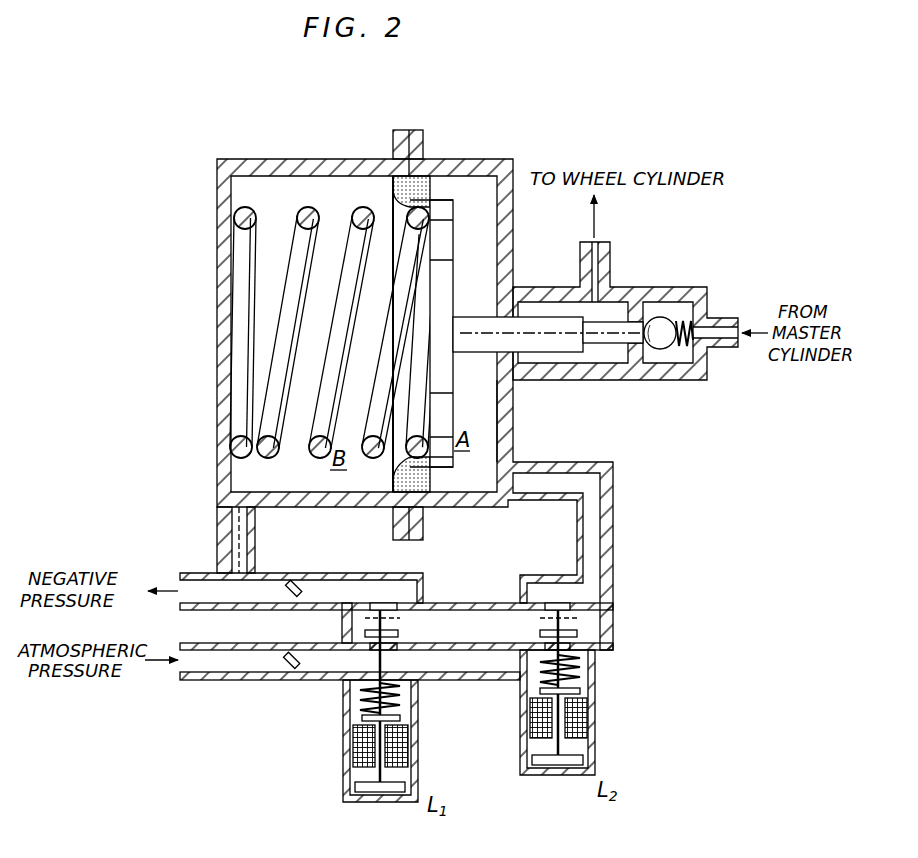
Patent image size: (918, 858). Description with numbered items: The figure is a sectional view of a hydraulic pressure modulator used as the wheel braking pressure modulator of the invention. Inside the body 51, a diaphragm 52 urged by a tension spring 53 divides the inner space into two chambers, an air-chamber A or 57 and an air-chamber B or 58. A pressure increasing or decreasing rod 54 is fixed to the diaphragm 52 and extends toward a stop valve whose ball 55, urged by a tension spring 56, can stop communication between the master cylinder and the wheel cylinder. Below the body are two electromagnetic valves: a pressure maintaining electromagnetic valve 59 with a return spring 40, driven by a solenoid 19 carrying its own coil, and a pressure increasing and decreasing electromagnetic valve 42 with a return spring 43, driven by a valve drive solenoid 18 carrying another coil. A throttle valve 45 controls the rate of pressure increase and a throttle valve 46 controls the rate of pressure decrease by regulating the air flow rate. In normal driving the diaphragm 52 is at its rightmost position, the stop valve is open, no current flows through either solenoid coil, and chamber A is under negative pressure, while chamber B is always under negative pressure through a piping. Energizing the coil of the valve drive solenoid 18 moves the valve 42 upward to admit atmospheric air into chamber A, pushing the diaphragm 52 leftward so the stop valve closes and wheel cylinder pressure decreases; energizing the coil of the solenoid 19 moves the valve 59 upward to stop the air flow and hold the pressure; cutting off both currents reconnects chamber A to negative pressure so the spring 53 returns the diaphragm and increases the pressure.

The body 51 is at (466, 168).
The diaphragm 52 is at (440, 212).
The tension spring 53 is at (232, 222).
The pressure increasing or decreasing rod 54 is at (468, 325).
The ball 55 is at (652, 318).
The tension spring 56 is at (690, 316).
The air-chamber (A) 57 is at (480, 407).
The air-chamber (B) 58 is at (232, 458).
The pressure maintaining electromagnetic valve 59 is at (540, 634).
The throttle valve 45 is at (298, 586).
The throttle valve 46 is at (290, 670).
The pressure increasing and decreasing electromagnetic valve 42 is at (400, 634).
The return spring 43 is at (398, 700).
The valve drive solenoid 18 is at (405, 742).
The return spring 40 is at (578, 672).
The solenoid 19 is at (586, 724).